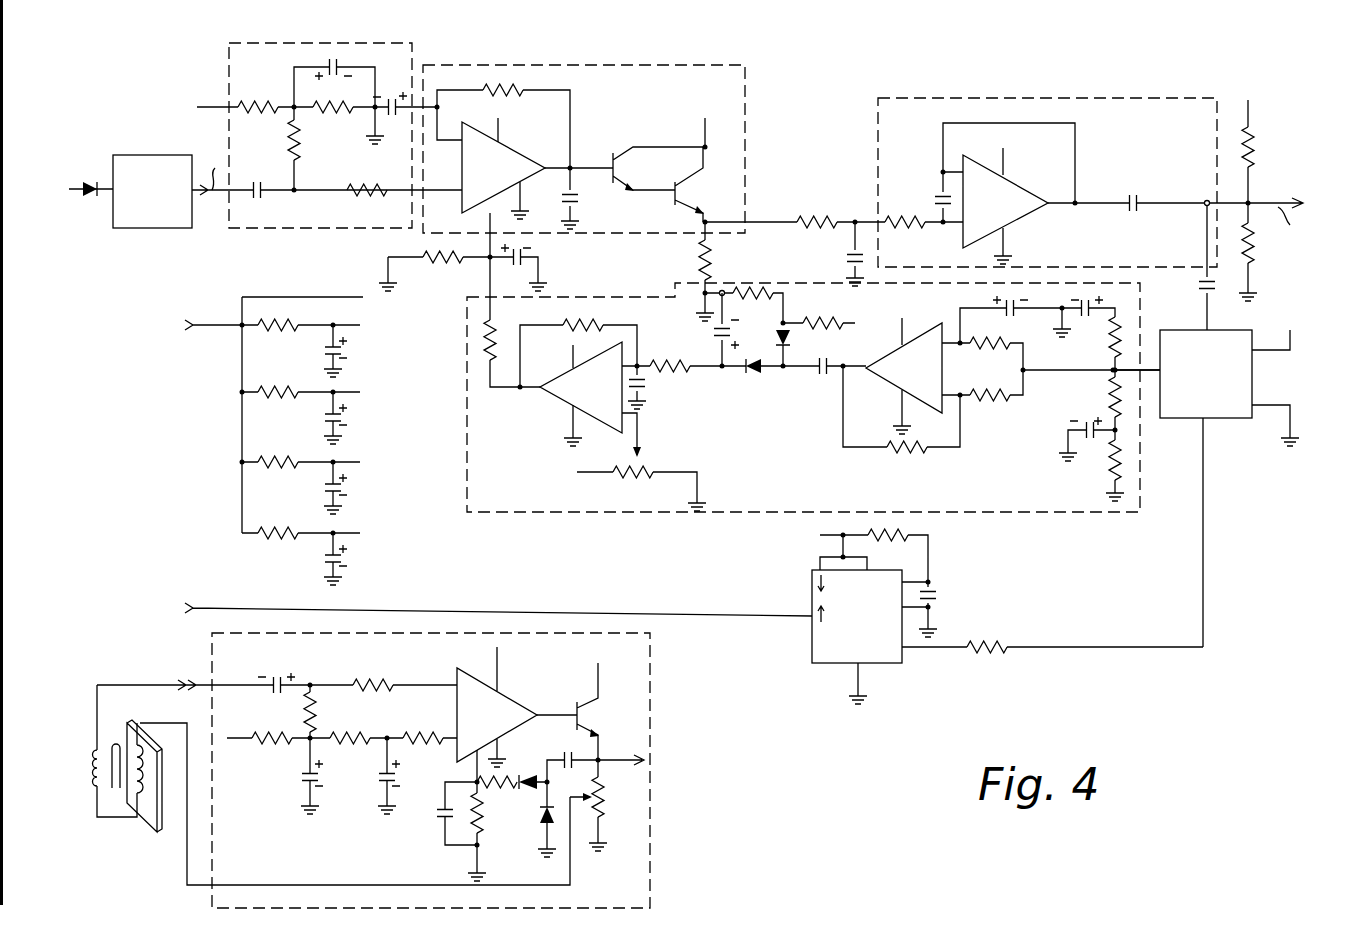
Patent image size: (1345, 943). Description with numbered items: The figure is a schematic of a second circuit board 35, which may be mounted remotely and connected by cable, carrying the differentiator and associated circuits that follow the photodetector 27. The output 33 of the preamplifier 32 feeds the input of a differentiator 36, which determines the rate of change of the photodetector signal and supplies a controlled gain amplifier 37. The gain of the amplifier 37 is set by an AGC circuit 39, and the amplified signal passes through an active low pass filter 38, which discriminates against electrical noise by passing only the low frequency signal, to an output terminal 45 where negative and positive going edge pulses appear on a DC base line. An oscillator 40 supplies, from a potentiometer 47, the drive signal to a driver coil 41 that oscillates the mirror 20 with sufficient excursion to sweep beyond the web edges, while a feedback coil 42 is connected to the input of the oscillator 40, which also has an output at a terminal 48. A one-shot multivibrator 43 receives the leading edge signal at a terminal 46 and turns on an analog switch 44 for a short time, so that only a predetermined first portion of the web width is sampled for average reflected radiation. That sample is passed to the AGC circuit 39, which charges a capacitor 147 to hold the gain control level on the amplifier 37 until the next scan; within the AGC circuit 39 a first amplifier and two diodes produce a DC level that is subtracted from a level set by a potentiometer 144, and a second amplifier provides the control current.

The mirror 20 is at (127, 779).
The photodetector 27 is at (90, 200).
The preamplifier 32 is at (152, 222).
The output of the preamplifier 33 is at (220, 195).
The second circuit board 35 is at (830, 82).
The differentiator 36 is at (412, 50).
The controlled gain amplifier 37 is at (683, 66).
The active low pass filter 38 is at (1122, 100).
The AGC circuit 39 is at (813, 384).
The oscillator 40 is at (400, 770).
The driver coil 41 is at (155, 753).
The feedback coil 42 is at (88, 775).
The one-shot multivibrator 43 is at (887, 664).
The analog switch 44 is at (1246, 331).
The output terminal 45 is at (1268, 205).
The terminal 46 is at (210, 607).
The potentiometer 47 is at (600, 802).
The terminal 48 is at (600, 756).
The potentiometer 144 is at (640, 474).
The capacitor 147 is at (510, 263).